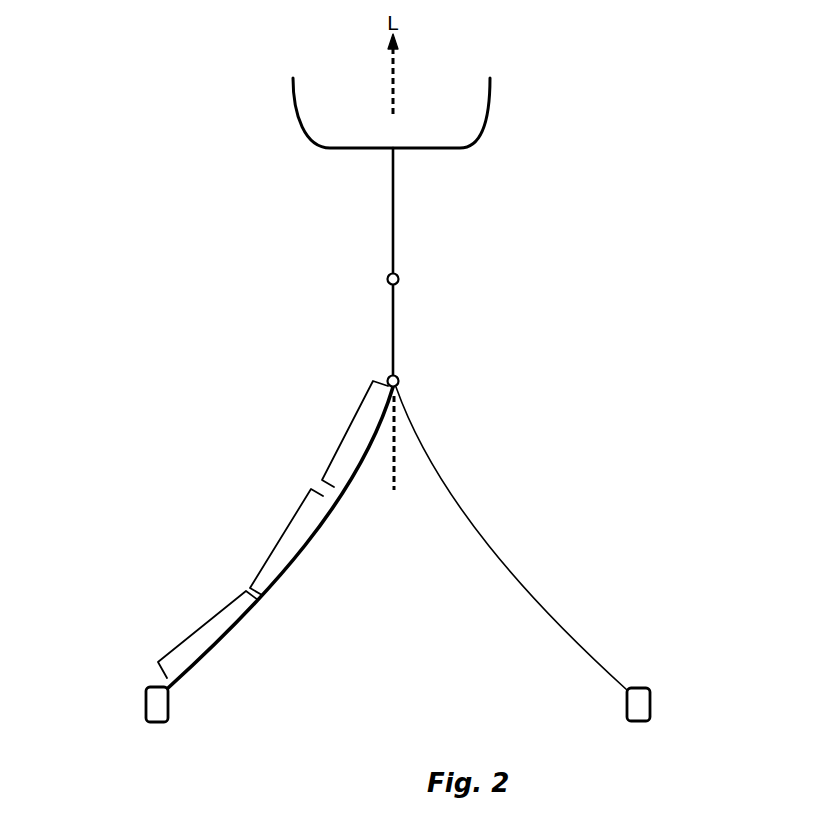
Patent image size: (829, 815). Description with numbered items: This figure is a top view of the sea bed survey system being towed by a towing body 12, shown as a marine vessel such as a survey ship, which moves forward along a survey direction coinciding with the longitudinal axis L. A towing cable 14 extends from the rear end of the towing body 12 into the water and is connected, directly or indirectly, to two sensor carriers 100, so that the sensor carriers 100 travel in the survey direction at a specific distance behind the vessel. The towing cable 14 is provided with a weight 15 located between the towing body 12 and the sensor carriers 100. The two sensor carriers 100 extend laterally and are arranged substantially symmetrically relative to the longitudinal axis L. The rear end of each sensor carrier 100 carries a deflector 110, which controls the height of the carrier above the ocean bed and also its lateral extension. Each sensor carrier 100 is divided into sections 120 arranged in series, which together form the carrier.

The towing body 12 is at (360, 100).
The towing cable 14 is at (395, 225).
The weight 15 is at (387, 279).
The sensor carrier 100 is at (330, 517).
The deflector 110 is at (395, 375).
The section 120 is at (346, 432).